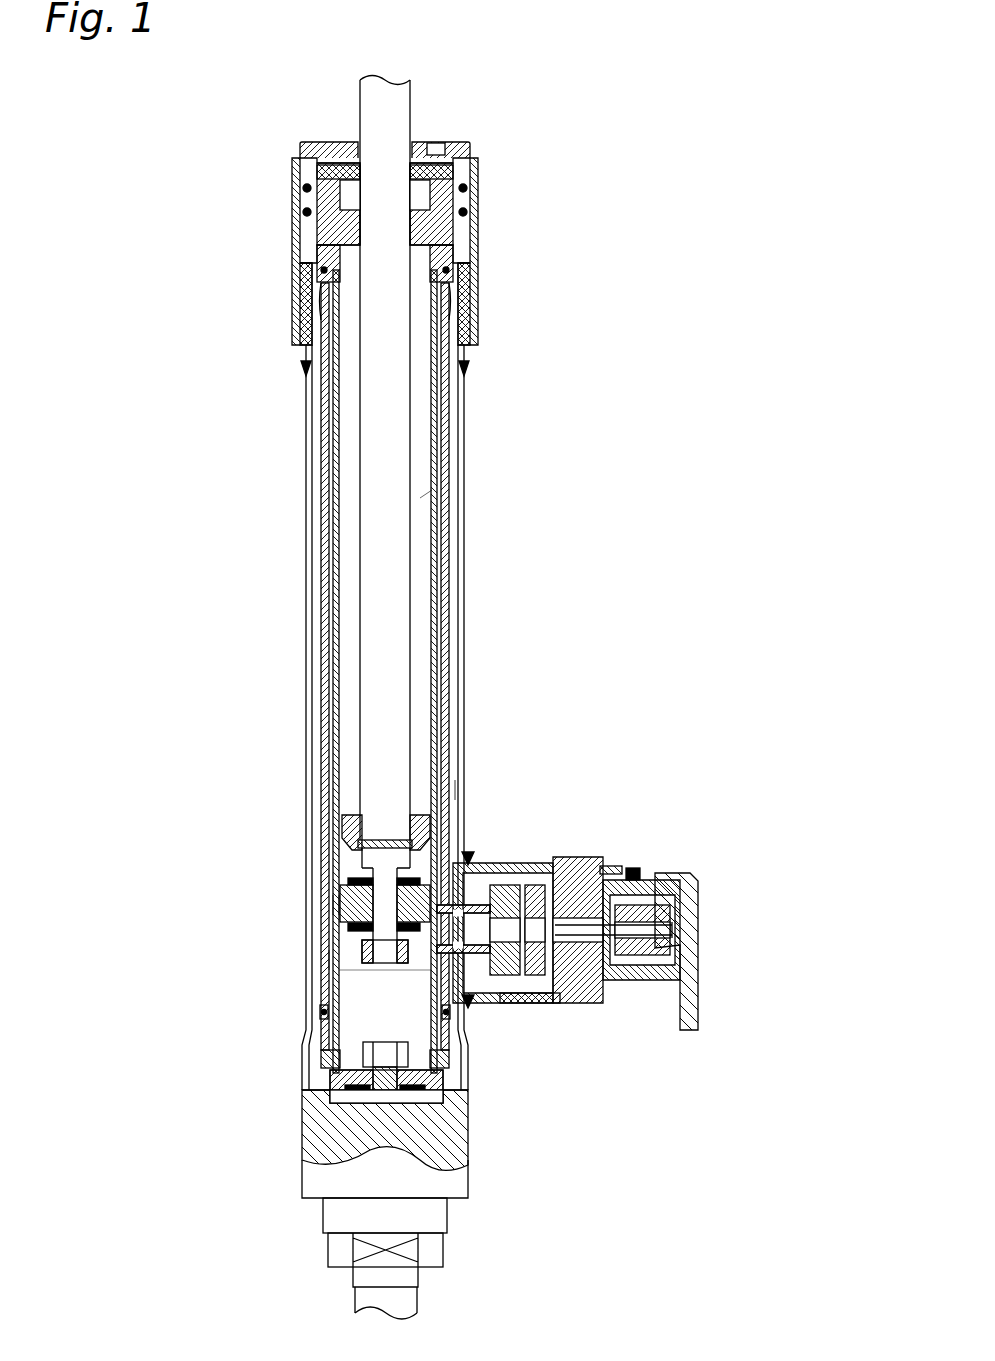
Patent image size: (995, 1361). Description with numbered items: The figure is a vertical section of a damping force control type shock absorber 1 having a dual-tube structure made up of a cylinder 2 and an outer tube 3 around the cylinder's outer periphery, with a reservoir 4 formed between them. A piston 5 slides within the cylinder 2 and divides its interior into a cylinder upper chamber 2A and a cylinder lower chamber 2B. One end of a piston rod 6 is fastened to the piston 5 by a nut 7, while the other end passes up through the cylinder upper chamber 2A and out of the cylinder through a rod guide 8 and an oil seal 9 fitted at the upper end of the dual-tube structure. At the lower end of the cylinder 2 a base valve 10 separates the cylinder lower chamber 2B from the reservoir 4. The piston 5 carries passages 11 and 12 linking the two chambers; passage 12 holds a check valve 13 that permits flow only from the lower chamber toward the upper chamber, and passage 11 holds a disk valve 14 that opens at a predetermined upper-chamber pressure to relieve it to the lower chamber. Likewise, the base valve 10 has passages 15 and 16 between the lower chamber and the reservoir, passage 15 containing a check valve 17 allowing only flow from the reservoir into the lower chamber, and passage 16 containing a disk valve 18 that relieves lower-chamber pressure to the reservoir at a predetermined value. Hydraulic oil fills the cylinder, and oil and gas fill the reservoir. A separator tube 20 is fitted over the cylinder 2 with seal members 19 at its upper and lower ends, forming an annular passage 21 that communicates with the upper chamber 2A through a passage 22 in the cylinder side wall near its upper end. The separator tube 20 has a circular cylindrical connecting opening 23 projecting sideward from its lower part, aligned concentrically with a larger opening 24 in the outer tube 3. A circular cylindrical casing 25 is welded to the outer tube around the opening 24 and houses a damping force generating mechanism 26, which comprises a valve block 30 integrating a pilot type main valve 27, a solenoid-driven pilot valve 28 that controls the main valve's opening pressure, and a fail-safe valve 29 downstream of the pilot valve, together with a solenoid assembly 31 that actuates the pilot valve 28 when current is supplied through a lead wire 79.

The damping force control type shock absorber 1 is at (605, 252).
The cylinder 2 is at (441, 450).
The cylinder upper chamber 2A is at (422, 498).
The cylinder lower chamber 2B is at (377, 988).
The outer tube 3 is at (468, 525).
The reservoir 4 is at (317, 455).
The piston 5 is at (333, 905).
The piston rod 6 is at (400, 105).
The nut 7 is at (330, 960).
The rod guide 8 is at (297, 247).
The oil seal 9 is at (472, 148).
The base valve 10 is at (468, 1090).
The passage 11 is at (340, 880).
The passage 12 is at (468, 855).
The check valve 13 is at (455, 790).
The disk valve 14 is at (362, 948).
The passage 15 is at (335, 1085).
The passage 16 is at (468, 1140).
The check valve 17 is at (330, 1057).
The disk valve 18 is at (468, 1167).
The seal members 19 is at (313, 275).
The separator tube 20 is at (323, 577).
The annular passage 21 is at (447, 612).
The passage 22 is at (470, 322).
The connecting opening 23 is at (477, 862).
The opening 24 is at (475, 1002).
The casing 25 is at (512, 862).
The damping force generating mechanism 26 is at (635, 872).
The main valve 27 is at (537, 865).
The pilot valve 28 is at (613, 870).
The fail-safe valve 29 is at (633, 863).
The valve block 30 is at (530, 998).
The solenoid assembly 31 is at (672, 878).
The lead wire 79 is at (700, 1018).